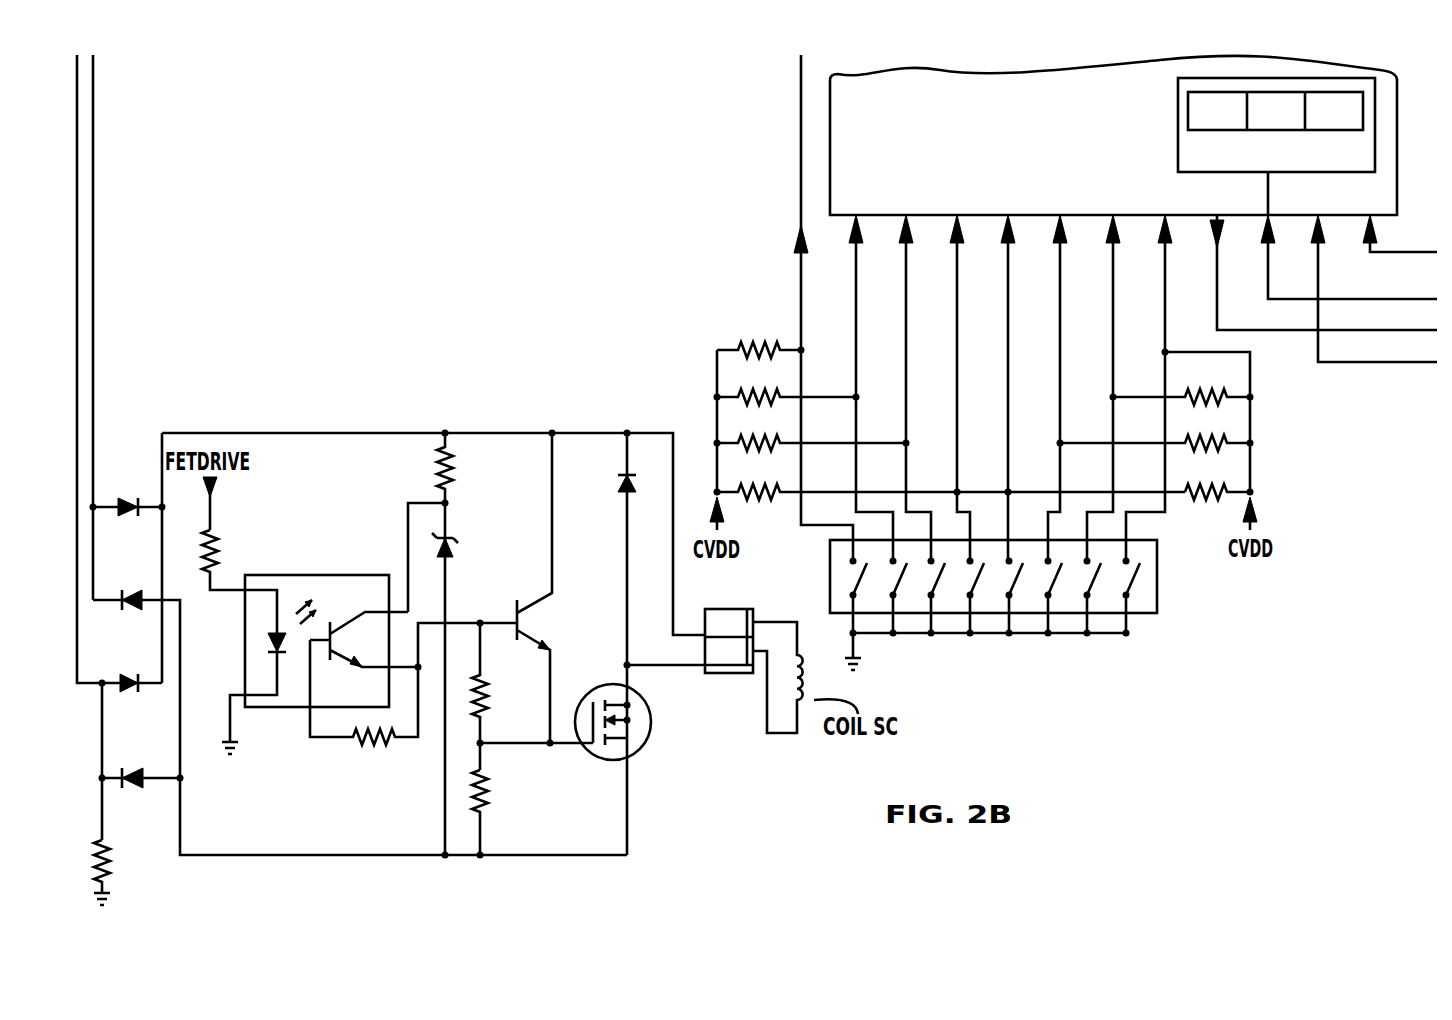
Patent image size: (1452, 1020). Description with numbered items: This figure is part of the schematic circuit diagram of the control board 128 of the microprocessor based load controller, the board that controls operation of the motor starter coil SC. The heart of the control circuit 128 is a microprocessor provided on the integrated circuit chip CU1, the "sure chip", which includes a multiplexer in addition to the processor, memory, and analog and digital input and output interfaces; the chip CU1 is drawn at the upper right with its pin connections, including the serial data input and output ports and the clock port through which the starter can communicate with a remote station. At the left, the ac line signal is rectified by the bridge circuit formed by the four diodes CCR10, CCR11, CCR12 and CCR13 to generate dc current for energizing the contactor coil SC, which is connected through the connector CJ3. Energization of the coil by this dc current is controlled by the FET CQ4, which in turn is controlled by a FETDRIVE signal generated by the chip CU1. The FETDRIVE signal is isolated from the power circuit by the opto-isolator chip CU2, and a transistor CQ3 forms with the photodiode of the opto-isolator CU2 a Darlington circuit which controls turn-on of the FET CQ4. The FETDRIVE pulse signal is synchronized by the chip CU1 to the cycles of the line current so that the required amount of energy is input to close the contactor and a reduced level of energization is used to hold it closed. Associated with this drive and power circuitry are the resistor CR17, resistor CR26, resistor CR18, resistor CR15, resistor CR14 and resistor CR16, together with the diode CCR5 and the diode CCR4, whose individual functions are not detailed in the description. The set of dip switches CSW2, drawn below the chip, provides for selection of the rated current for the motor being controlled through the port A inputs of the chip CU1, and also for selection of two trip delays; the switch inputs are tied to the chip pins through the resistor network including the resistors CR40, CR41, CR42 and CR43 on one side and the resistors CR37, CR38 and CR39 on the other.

The diode CCR10 is at (128, 483).
The diode CCR11 is at (126, 578).
The diode CCR12 is at (117, 661).
The diode CCR13 is at (140, 761).
The resistor CR17 is at (128, 875).
The resistor CR26 is at (239, 571).
The opto-isolator chip CU2 is at (320, 646).
The resistor CR18 is at (412, 703).
The resistor CR15 is at (461, 522).
The zener diode CCR5 is at (477, 679).
The diode CCR4 is at (599, 644).
The transistor CQ3 is at (560, 588).
The resistor CR14 is at (532, 696).
The resistor CR16 is at (507, 812).
The FET CQ4 is at (641, 737).
The connector CJ3 is at (690, 627).
The integrated circuit chip CU1 is at (1113, 135).
The resistor CR40 is at (756, 325).
The resistor CR41 is at (756, 385).
The resistor CR42 is at (779, 428).
The resistor CR43 is at (951, 524).
The resistor CR37 is at (1208, 383).
The resistor CR38 is at (1181, 429).
The resistor CR39 is at (1244, 481).
The set of dip switches CSW2 is at (1031, 588).
The control board 128 is at (1040, 709).